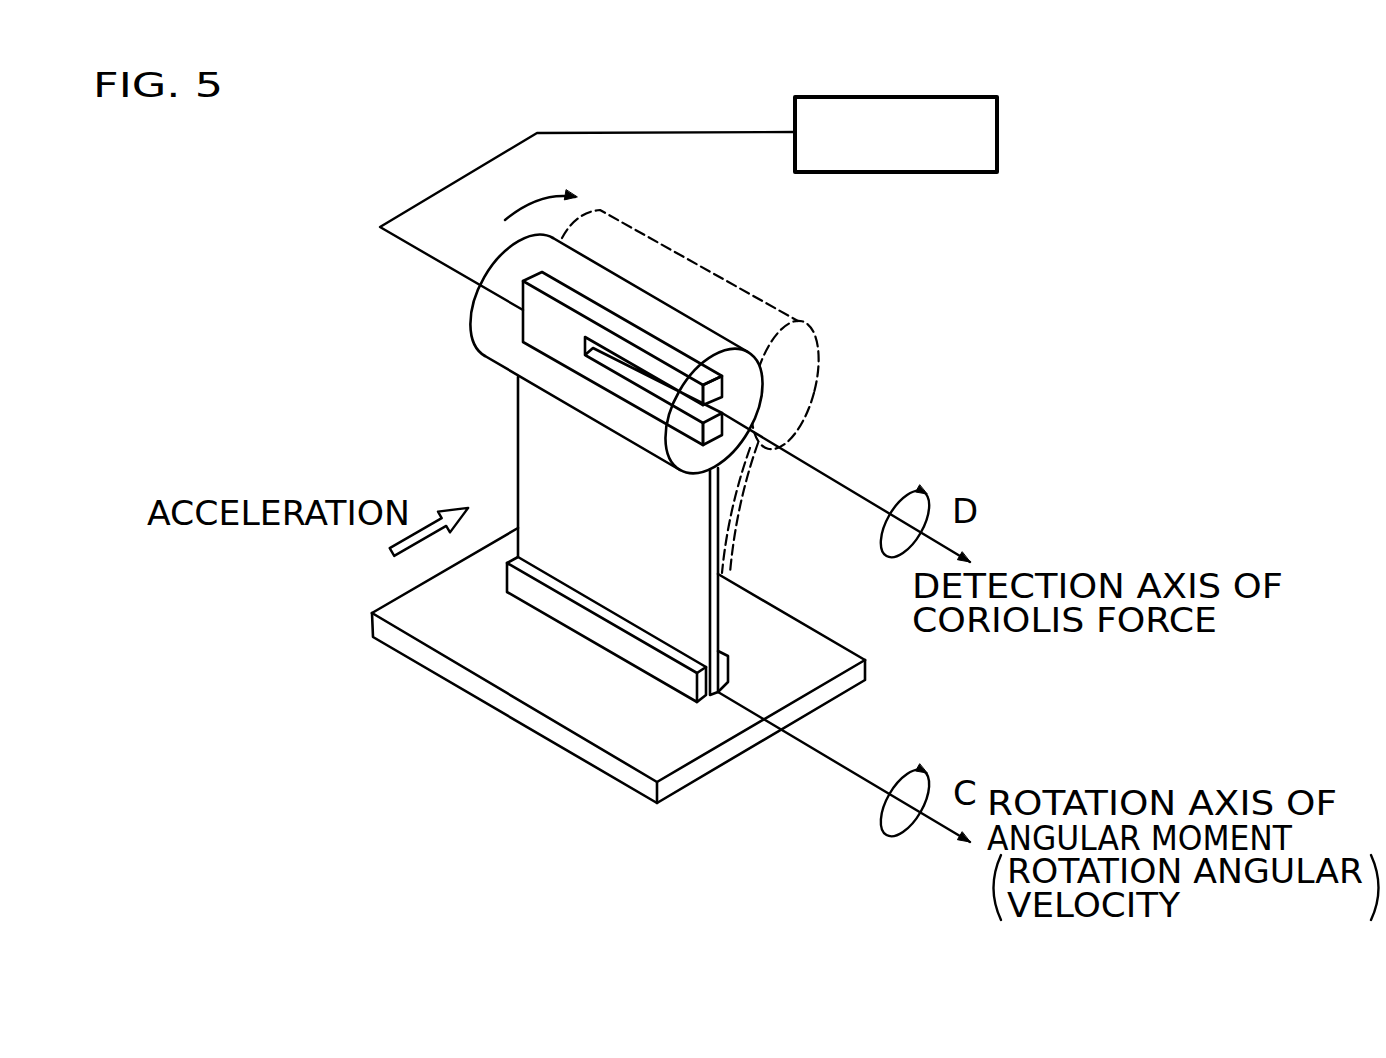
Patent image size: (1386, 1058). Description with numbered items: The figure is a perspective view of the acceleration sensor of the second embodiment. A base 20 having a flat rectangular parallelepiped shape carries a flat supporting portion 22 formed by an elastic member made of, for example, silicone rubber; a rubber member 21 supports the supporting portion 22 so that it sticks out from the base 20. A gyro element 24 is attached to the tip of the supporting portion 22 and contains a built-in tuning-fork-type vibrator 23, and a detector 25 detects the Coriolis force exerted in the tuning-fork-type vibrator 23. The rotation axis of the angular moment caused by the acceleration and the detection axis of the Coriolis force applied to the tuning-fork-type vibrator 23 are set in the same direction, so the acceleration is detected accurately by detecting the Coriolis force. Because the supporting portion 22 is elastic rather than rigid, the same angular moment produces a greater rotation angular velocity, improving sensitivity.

The base 20 is at (473, 685).
The rubber member 21 is at (607, 640).
The supporting portion 22 is at (535, 473).
The tuning-fork-type vibrator 23 is at (717, 388).
The gyro element 24 is at (495, 346).
The detector 25 is at (917, 95).